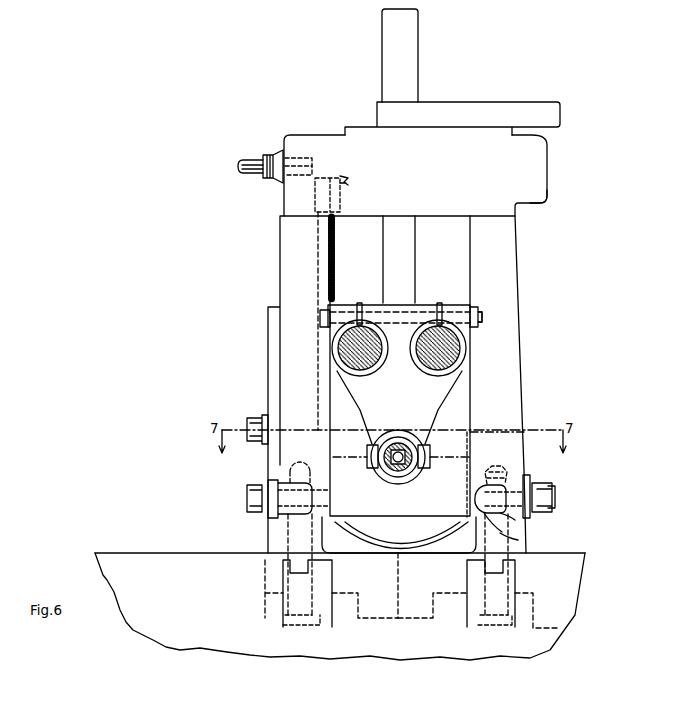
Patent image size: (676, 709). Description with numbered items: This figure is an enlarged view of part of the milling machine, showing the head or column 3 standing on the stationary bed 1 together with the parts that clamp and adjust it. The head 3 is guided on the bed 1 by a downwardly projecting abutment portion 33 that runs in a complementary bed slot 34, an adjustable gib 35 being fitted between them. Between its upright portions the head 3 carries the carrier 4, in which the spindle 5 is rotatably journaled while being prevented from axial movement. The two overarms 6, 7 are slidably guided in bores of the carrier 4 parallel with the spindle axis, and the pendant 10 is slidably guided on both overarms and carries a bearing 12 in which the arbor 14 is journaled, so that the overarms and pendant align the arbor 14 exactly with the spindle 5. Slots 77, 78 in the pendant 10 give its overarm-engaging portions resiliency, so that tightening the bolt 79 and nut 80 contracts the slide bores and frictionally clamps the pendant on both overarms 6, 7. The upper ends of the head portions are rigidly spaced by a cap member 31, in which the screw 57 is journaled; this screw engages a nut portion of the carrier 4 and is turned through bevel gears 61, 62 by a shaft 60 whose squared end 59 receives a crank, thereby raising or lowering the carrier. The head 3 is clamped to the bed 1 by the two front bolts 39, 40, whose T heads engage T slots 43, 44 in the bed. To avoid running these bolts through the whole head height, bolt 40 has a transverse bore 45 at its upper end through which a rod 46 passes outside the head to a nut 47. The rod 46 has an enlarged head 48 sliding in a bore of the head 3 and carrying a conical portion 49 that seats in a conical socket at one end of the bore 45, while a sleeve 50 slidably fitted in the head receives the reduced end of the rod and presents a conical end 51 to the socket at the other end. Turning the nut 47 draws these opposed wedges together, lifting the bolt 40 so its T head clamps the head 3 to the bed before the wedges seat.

The bed 1 is at (150, 557).
The head 3 is at (414, 281).
The carrier 4 is at (401, 482).
The spindle 5 is at (406, 485).
The overarm 6 is at (378, 362).
The overarm 7 is at (425, 363).
The pendant 10 is at (430, 418).
The bearing 12 is at (398, 443).
The arbor 14 is at (386, 469).
The cap member 31 is at (533, 204).
The abutment portion 33 is at (365, 618).
The bed slot 34 is at (412, 618).
The gib 35 is at (438, 603).
The front bolt 39 is at (310, 545).
The front bolt 40 is at (437, 533).
The T slot 43 is at (305, 556).
The T slot 44 is at (498, 582).
The transverse bore 45 is at (502, 532).
The rod 46 is at (270, 476).
The nut 47 is at (555, 488).
The enlarged head 48 is at (477, 484).
The conical portion 49 is at (492, 470).
The sleeve 50 is at (276, 522).
The conical end 51 is at (505, 513).
The screw 57 is at (336, 264).
The squared end 59 is at (248, 173).
The shaft 60 is at (295, 156).
The bevel gear 61 is at (308, 187).
The bevel gear 62 is at (309, 158).
The slot 77 is at (359, 304).
The slot 78 is at (440, 304).
The bolt 79 is at (480, 318).
The nut 80 is at (476, 307).